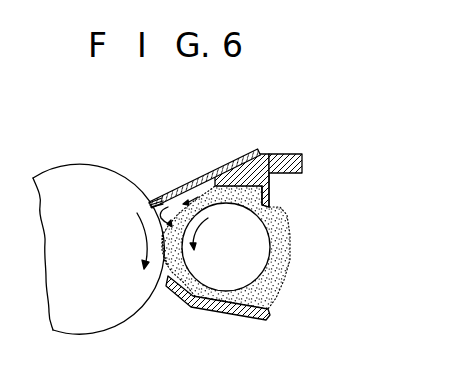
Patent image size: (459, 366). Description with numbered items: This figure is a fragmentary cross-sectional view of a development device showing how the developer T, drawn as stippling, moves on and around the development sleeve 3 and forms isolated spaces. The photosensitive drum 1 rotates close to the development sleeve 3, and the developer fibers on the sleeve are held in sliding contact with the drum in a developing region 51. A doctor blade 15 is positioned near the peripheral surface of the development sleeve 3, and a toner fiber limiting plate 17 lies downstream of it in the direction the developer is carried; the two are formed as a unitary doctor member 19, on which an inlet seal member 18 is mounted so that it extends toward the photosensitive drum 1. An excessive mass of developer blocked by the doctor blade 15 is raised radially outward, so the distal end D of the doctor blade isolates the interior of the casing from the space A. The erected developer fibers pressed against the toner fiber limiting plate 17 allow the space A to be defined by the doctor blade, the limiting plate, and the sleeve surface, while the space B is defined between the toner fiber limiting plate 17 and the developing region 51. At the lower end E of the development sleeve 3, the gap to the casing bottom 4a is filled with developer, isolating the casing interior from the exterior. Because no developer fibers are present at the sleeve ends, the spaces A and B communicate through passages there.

The photosensitive drum 1 is at (93, 173).
The development sleeve 3 is at (263, 271).
The bottom plate of developing device 4a is at (173, 294).
The doctor blade 15 is at (270, 188).
The toner fiber limiting plate 17 is at (233, 172).
The inlet seal member 18 is at (212, 171).
The doctor member 19 is at (283, 160).
The developing region 51 is at (162, 248).
The space A is at (252, 190).
The space B is at (172, 193).
The distal end of the doctor blade D is at (278, 209).
The lower end of the development sleeve E is at (222, 292).
The developer T is at (287, 247).